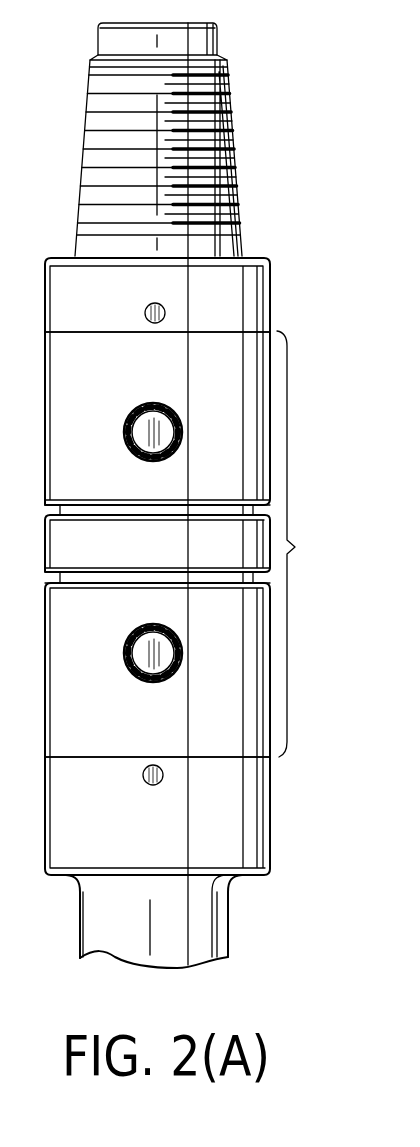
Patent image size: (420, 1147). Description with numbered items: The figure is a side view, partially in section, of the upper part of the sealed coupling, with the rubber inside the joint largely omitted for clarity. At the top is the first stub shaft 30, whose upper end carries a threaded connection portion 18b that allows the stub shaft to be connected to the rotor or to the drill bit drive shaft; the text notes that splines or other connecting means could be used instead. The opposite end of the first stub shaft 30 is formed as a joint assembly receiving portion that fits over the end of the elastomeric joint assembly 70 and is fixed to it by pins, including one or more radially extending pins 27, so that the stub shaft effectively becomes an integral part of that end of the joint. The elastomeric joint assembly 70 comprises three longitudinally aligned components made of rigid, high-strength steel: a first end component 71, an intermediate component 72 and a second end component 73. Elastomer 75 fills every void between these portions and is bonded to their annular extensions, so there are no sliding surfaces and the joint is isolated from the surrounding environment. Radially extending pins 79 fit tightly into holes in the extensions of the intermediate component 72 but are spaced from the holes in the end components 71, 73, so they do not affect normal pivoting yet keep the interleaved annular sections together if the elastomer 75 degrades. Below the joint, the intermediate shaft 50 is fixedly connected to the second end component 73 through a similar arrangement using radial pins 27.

The connection portion 18b is at (195, 166).
The first stub shaft 30 is at (246, 258).
The elastomeric joint assembly 70 is at (305, 544).
The first end component 71 is at (233, 377).
The intermediate component 72 is at (120, 556).
The second end component 73 is at (232, 637).
The elastomer 75 is at (168, 458).
The pins 79 is at (178, 428).
The radially extending pins 27 is at (147, 779).
The intermediate shaft 50 is at (235, 823).